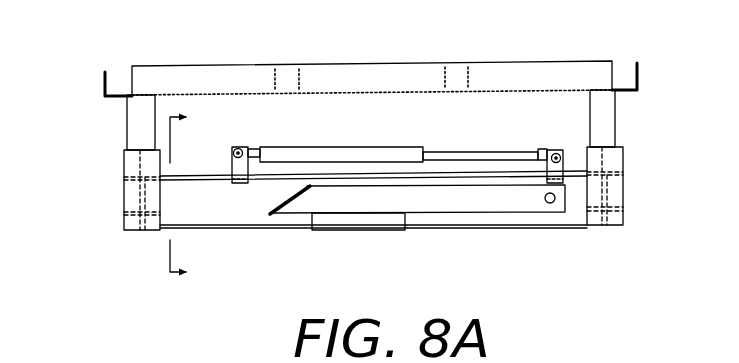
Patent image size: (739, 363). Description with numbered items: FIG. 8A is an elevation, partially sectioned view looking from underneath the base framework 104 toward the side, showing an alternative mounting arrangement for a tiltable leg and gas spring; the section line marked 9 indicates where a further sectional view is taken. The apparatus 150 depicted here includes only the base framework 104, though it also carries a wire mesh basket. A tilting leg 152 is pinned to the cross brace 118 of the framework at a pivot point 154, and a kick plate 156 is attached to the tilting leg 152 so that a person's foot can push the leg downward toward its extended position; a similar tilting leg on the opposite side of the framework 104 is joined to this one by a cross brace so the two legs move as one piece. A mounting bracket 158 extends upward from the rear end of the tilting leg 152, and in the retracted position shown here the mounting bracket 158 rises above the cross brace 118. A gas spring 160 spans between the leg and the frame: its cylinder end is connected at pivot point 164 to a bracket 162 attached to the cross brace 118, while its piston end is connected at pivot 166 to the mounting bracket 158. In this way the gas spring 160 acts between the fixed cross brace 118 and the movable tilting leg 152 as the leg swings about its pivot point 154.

The apparatus 150 is at (110, 46).
The base framework 104 is at (585, 70).
The mounting bracket 158 is at (560, 167).
The cross brace 118 is at (223, 208).
The bracket 162 is at (231, 166).
The pivot point 164 is at (240, 146).
The gas spring 160 is at (333, 150).
The pivot 166 is at (553, 155).
The tilting leg 152 is at (407, 203).
The pivot point 154 is at (546, 205).
The kick plate 156 is at (383, 224).
The section line 9- 9 is at (192, 194).